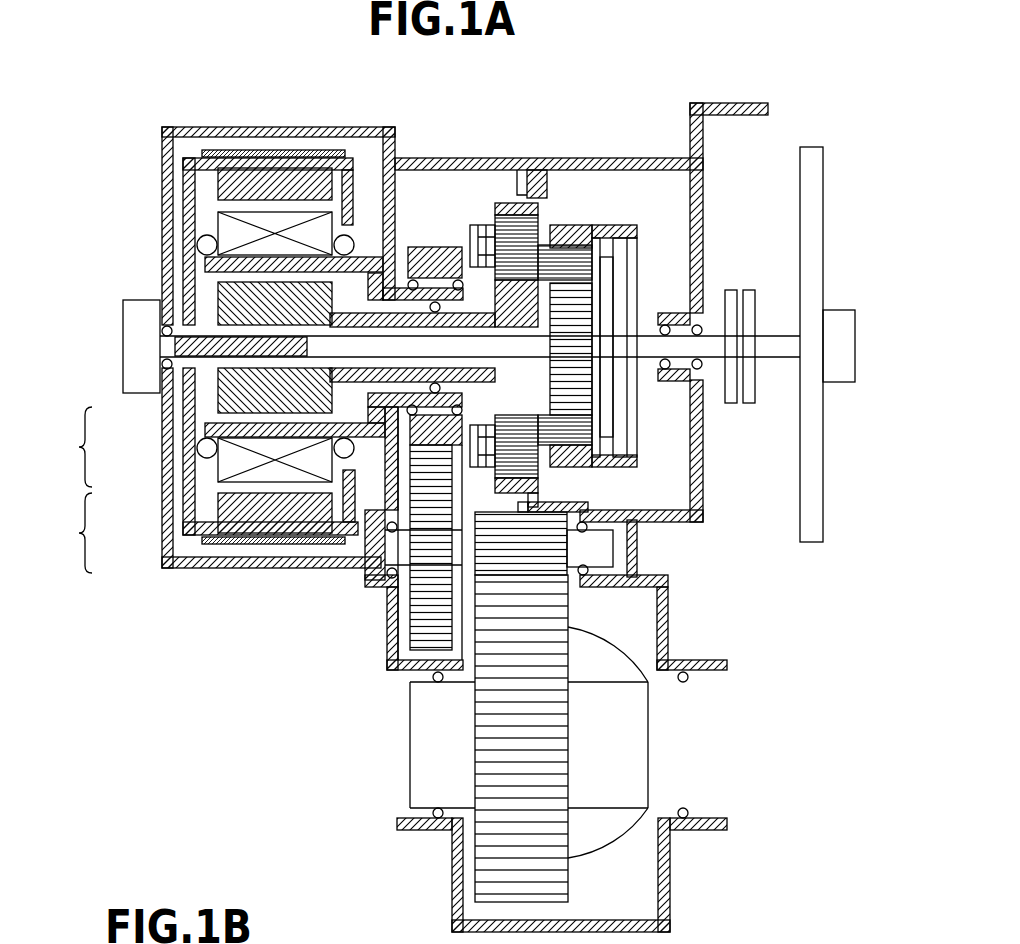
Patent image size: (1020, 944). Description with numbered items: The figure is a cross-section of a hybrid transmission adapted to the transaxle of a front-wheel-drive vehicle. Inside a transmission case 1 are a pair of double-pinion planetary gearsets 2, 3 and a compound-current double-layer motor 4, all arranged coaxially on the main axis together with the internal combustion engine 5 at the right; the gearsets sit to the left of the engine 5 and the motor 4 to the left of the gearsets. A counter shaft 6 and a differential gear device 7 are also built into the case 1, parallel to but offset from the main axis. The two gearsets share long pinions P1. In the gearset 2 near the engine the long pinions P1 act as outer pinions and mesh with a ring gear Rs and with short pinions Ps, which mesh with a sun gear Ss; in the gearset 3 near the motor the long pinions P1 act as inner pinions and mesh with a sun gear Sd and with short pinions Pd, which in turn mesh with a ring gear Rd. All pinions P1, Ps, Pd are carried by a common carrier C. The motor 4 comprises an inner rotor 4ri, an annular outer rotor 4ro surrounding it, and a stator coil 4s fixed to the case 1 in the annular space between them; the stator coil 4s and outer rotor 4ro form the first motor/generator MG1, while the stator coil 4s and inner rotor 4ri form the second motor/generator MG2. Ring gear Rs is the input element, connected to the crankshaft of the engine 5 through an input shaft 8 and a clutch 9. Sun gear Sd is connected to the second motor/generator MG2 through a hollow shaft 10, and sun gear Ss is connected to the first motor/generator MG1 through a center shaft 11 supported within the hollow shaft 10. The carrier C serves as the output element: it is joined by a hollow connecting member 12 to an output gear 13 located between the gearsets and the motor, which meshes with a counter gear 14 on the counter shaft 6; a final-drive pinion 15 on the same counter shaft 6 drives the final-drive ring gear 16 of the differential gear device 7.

The transmission case 1 is at (413, 160).
The double-pinion planetary gearset 2 is at (593, 198).
The double-pinion planetary gearset 3 is at (502, 192).
The compound-current double-layer motor 4 is at (187, 150).
The inner rotor 4ri is at (230, 395).
The stator coil 4s is at (228, 465).
The outer rotor 4ro is at (240, 510).
The internal combustion engine 5 is at (840, 327).
The counter shaft 6 is at (593, 547).
The differential gear device 7 is at (634, 645).
The input shaft 8 is at (712, 343).
The clutch 9 is at (755, 343).
The hollow shaft 10 is at (377, 373).
The center shaft 11 is at (323, 347).
The hollow connecting member 12 is at (430, 247).
The output gear 13 is at (408, 253).
The counter gear 14 is at (423, 607).
The final-drive pinion 15 is at (533, 540).
The final-drive ring gear 16 is at (538, 645).
The first motor/generator MG1 is at (57, 533).
The second motor/generator MG2 is at (57, 447).
The carrier C is at (472, 240).
The short pinion Pd is at (505, 235).
The ring gear Rd is at (550, 228).
The ring gear Rs is at (565, 233).
The sun gear Sd is at (567, 323).
The sun gear Ss is at (575, 350).
The long pinion P1 is at (573, 263).
The short pinion Ps is at (618, 282).